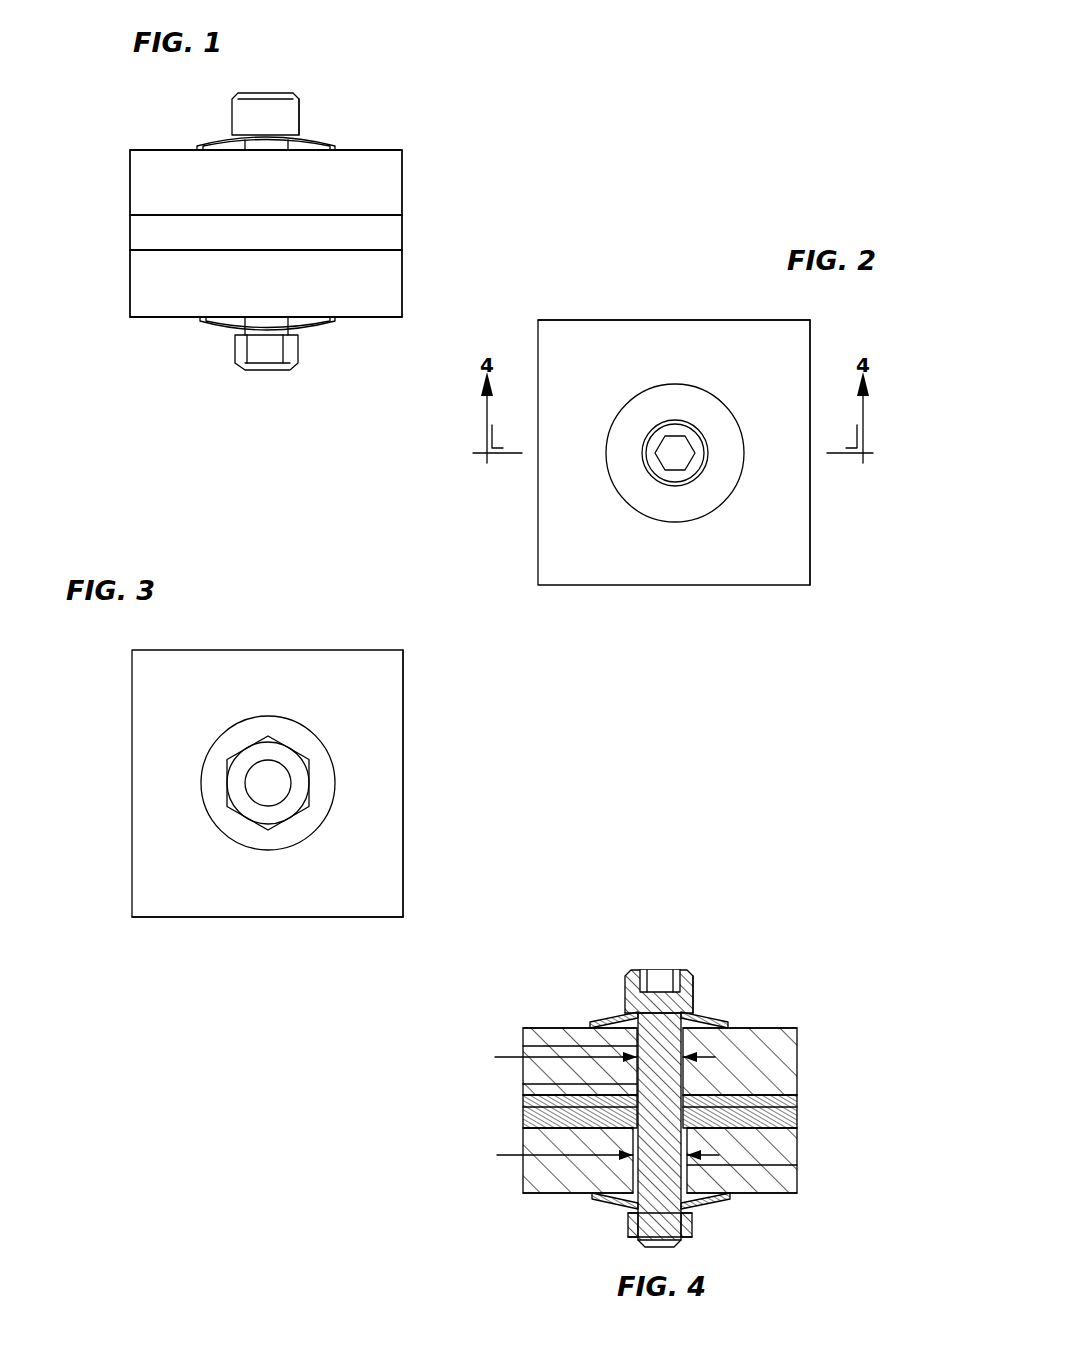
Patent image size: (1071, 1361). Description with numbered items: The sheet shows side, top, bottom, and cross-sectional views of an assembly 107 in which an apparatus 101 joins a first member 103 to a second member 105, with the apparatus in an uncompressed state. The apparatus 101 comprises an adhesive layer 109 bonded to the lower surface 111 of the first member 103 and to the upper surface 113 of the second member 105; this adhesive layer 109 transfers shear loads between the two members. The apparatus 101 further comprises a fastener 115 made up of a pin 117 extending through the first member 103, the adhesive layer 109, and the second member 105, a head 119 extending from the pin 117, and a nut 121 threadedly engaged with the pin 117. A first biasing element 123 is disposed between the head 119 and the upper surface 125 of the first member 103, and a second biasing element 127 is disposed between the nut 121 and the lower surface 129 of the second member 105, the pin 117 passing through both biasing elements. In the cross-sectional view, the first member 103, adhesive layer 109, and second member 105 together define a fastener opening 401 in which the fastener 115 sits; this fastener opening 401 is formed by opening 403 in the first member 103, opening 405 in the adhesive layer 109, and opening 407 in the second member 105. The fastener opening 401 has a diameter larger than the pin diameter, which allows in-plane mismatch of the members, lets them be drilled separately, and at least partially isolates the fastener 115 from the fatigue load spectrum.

In FIG. 1, the apparatus 101 is at (305, 85).
In FIG. 2, the apparatus 101 is at (625, 395).
In FIG. 3, the apparatus 101 is at (212, 728).
In FIG. 4, the apparatus 101 is at (700, 960).
In FIG. 1, the first member 103 is at (290, 196).
In FIG. 2, the first member 103 is at (800, 350).
In FIG. 4, the first member 103 is at (784, 1070).
In FIG. 1, the second member 105 is at (290, 292).
In FIG. 3, the second member 105 is at (393, 720).
In FIG. 4, the second member 105 is at (784, 1175).
In FIG. 1, the assembly 107 is at (445, 133).
In FIG. 2, the assembly 107 is at (660, 308).
In FIG. 3, the assembly 107 is at (285, 635).
In FIG. 4, the assembly 107 is at (475, 983).
In FIG. 1, the adhesive layer 109 is at (290, 247).
In FIG. 4, the adhesive layer 109 is at (797, 1128).
In FIG. 1, the lower surface 111 is at (380, 215).
In FIG. 4, the lower surface 111 is at (800, 1096).
In FIG. 1, the upper surface 113 is at (150, 250).
In FIG. 4, the upper surface 113 is at (540, 1115).
In FIG. 1, the fastener 115 is at (232, 112).
In FIG. 2, the fastener 115 is at (640, 453).
In FIG. 4, the fastener 115 is at (625, 990).
In FIG. 1, the pin 117 is at (265, 145).
In FIG. 4, the pin 117 is at (690, 1224).
In FIG. 1, the head 119 is at (296, 118).
In FIG. 2, the head 119 is at (713, 432).
In FIG. 4, the head 119 is at (695, 1005).
In FIG. 1, the nut 121 is at (243, 350).
In FIG. 3, the nut 121 is at (255, 813).
In FIG. 4, the nut 121 is at (636, 1224).
In FIG. 1, the first biasing element 123 is at (226, 143).
In FIG. 2, the first biasing element 123 is at (665, 505).
In FIG. 4, the first biasing element 123 is at (630, 1020).
In FIG. 1, the upper surface 125 is at (360, 150).
In FIG. 2, the upper surface 125 is at (754, 369).
In FIG. 4, the upper surface 125 is at (770, 1028).
In FIG. 1, the second biasing element 127 is at (200, 328).
In FIG. 3, the second biasing element 127 is at (318, 778).
In FIG. 4, the second biasing element 127 is at (602, 1203).
In FIG. 1, the lower surface 129 is at (146, 317).
In FIG. 3, the lower surface 129 is at (367, 887).
In FIG. 4, the lower surface 129 is at (536, 1194).
In FIG. 4, the fastener opening 401 is at (560, 1084).
In FIG. 4, the opening 403 is at (565, 1055).
In FIG. 4, the opening 405 is at (797, 1107).
In FIG. 4, the opening 407 is at (735, 1185).